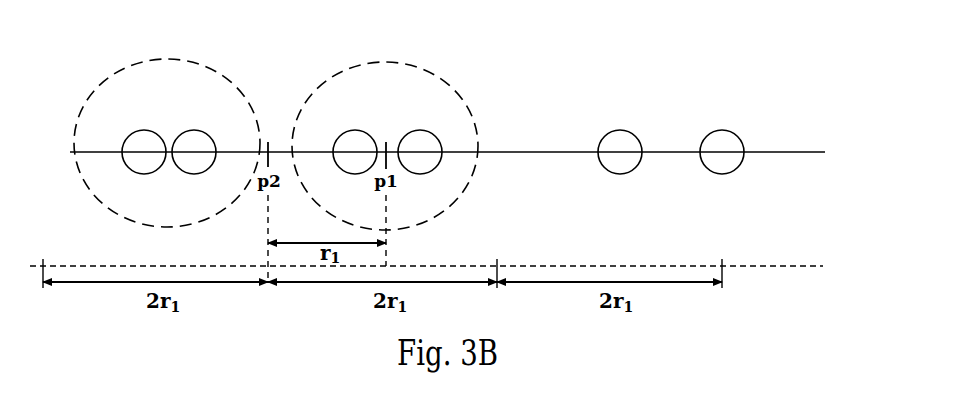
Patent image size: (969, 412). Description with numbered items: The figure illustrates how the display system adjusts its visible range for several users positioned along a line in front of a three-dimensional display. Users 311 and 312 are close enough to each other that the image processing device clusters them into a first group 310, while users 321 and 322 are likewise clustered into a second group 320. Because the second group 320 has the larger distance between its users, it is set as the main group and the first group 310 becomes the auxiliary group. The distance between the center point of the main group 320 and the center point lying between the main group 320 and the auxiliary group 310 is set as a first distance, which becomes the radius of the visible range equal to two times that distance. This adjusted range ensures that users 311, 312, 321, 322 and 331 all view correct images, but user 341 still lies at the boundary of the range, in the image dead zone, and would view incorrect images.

The first group 310 is at (166, 58).
The user 311 is at (142, 130).
The user 312 is at (193, 130).
The second group 320 is at (384, 62).
The user 321 is at (355, 130).
The user 322 is at (420, 130).
The user 331 is at (621, 130).
The user 341 is at (722, 130).